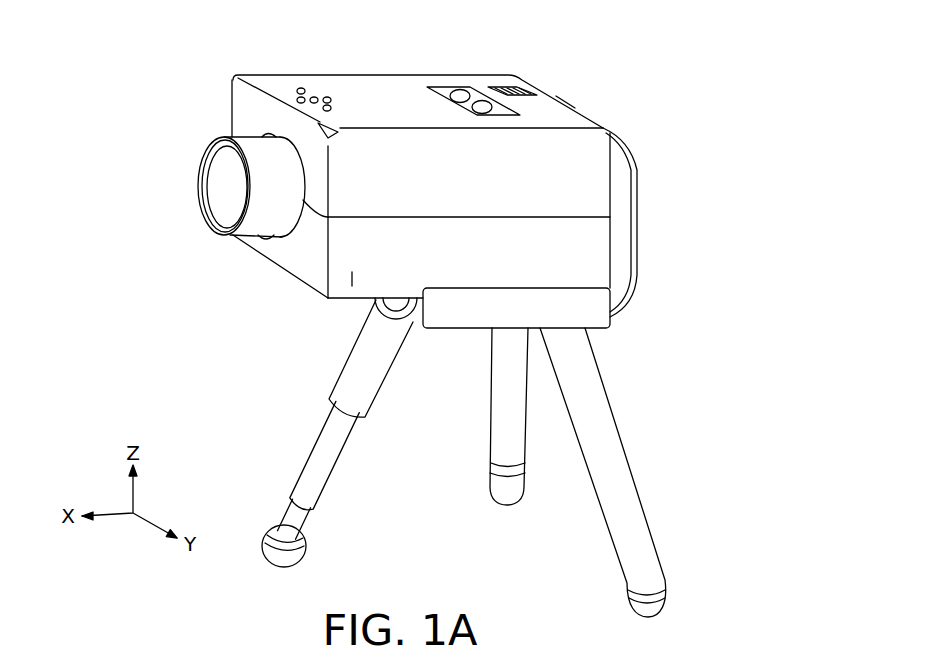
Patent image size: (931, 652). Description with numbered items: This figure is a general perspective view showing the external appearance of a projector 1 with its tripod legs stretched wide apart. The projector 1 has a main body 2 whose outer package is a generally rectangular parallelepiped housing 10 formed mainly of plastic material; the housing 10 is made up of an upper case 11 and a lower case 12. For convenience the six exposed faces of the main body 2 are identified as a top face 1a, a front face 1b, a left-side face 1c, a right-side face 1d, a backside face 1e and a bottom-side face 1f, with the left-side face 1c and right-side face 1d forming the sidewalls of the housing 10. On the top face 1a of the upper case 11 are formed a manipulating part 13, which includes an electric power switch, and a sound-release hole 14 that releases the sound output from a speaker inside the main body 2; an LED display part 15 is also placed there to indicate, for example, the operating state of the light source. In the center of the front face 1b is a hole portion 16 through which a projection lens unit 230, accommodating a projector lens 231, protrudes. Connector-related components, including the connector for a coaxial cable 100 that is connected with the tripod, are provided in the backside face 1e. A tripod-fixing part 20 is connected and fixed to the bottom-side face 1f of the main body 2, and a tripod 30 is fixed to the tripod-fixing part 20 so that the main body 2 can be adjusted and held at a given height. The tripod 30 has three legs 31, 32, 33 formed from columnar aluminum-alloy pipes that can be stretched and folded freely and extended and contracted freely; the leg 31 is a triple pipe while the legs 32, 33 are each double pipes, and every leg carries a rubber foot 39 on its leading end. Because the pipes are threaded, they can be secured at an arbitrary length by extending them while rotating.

The projector 1 is at (699, 49).
The housing 10 is at (540, 52).
The main body 2 is at (594, 101).
The top face 1a is at (395, 100).
The front face 1b is at (247, 107).
The left-side face 1c is at (577, 203).
The right-side face 1d is at (282, 75).
The backside face 1e is at (610, 192).
The bottom-side face 1f is at (291, 277).
The upper case 11 is at (558, 102).
The lower case 12 is at (350, 272).
The manipulating part 13 is at (438, 90).
The sound-release hole 14 is at (328, 96).
The LED display part 15 is at (500, 90).
The hole portion 16 is at (247, 248).
The tripod-fixing part 20 is at (610, 316).
The tripod 30 is at (689, 436).
The leg 31 is at (368, 406).
The leg 32 is at (627, 460).
The leg 33 is at (492, 375).
The rubber foot 39 is at (298, 553).
The coaxial cable 100 is at (637, 272).
The projection lens unit 230 is at (185, 144).
The projector lens 231 is at (227, 195).